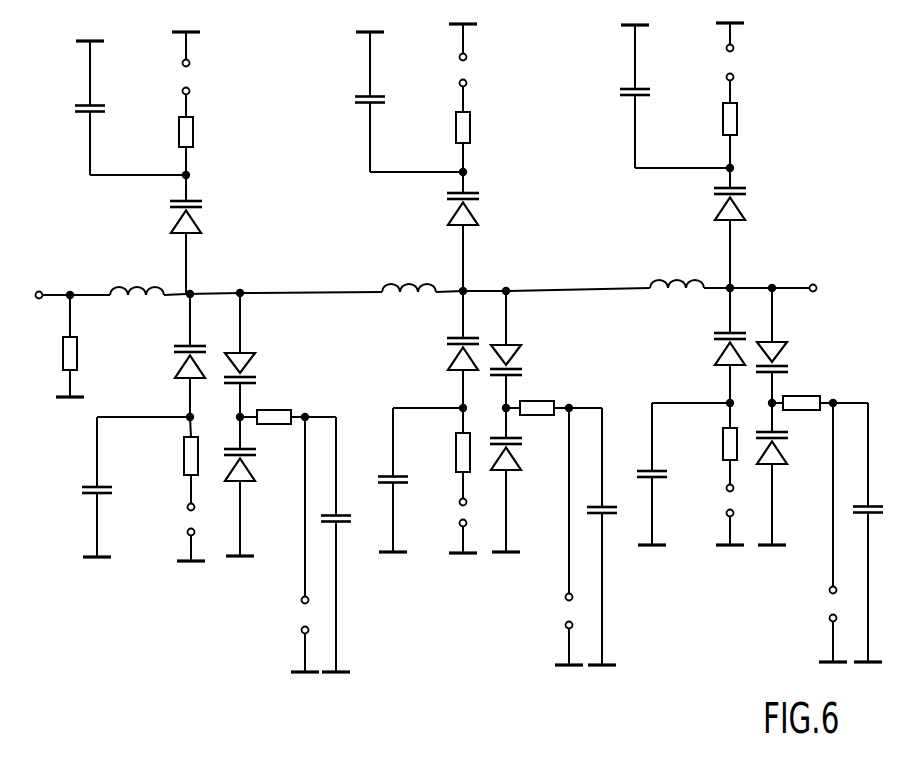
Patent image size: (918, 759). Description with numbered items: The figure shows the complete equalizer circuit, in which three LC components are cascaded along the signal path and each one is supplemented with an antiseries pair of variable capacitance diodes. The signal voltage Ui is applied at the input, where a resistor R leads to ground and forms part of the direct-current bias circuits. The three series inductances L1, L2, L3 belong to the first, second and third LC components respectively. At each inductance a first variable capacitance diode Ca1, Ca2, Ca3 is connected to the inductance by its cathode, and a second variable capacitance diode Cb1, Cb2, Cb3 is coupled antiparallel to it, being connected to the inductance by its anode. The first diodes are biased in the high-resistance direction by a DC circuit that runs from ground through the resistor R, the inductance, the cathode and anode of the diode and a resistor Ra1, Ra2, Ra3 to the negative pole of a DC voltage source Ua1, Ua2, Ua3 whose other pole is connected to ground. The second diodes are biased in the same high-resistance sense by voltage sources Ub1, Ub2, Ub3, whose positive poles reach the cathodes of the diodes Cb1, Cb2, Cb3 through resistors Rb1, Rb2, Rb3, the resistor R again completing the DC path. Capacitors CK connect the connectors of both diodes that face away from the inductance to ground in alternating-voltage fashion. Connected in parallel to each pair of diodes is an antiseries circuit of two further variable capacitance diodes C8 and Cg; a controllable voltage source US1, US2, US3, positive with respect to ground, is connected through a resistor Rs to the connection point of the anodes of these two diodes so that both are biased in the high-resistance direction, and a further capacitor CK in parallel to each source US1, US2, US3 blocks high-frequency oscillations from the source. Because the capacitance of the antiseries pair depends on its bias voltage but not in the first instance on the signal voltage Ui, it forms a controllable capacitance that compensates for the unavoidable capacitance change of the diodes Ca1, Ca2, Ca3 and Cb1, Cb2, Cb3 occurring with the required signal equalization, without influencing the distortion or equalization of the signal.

The signal voltage Ui is at (53, 274).
The resistor R is at (62, 344).
The inductance L1 is at (128, 271).
The inductance L2 is at (422, 268).
The inductance L3 is at (690, 266).
The capacitor CK is at (471, 348).
The voltage source Ub1 is at (209, 63).
The voltage source Ub2 is at (486, 55).
The voltage source Ub3 is at (753, 52).
The resistor Rb1 is at (209, 135).
The resistor Rb2 is at (486, 130).
The resistor Rb3 is at (752, 125).
The second variable capacitance diode Cb1 is at (210, 234).
The second variable capacitance diode Cb2 is at (486, 231).
The second variable capacitance diode Cb3 is at (754, 228).
The first variable capacitance diode Ca1 is at (169, 354).
The first variable capacitance diode Ca2 is at (439, 348).
The first variable capacitance diode Ca3 is at (707, 344).
The resistor Ra1 is at (171, 459).
The resistor Ra2 is at (442, 452).
The resistor Ra3 is at (709, 442).
The DC voltage source Ua1 is at (169, 528).
The DC voltage source Ua2 is at (447, 521).
The DC voltage source Ua3 is at (712, 512).
The variable capacitance diode C8 is at (520, 351).
The variable capacitance diode Cg is at (523, 479).
The resistor Rs is at (538, 391).
The controllable voltage source US1 is at (284, 544).
The controllable voltage source US2 is at (546, 536).
The controllable voltage source US3 is at (809, 532).